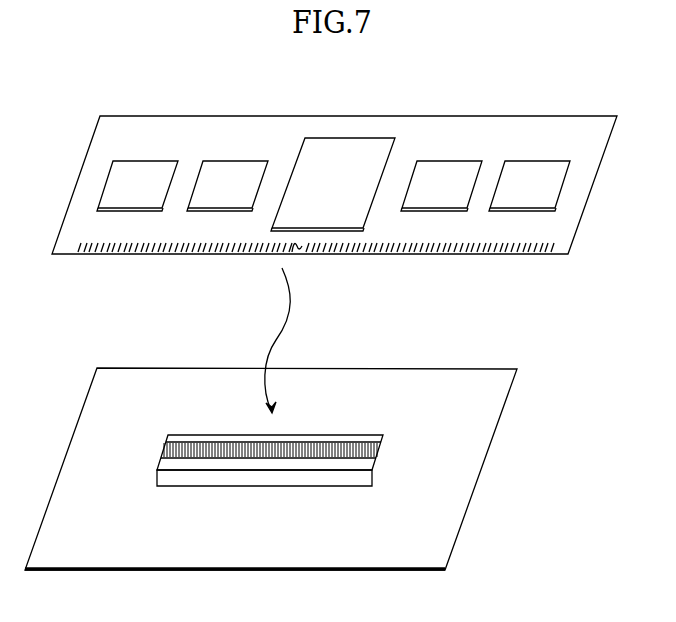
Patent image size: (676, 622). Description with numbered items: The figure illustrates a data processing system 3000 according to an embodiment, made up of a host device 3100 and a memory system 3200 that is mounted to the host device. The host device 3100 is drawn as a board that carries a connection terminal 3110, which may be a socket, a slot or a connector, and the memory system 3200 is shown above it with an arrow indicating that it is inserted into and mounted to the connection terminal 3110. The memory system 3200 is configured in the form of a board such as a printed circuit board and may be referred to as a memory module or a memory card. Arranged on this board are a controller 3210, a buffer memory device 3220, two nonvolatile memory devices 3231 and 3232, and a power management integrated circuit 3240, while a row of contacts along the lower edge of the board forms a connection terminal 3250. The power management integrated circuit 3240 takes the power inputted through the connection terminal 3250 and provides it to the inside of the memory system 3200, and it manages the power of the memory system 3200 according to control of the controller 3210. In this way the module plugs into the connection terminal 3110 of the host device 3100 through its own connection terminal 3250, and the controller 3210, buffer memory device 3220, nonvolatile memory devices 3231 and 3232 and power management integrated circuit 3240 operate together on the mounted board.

The data processing system 3000 is at (193, 85).
The memory system 3200 is at (334, 206).
The controller 3210 is at (333, 184).
The buffer memory device 3220 is at (227, 186).
The nonvolatile memory device 3231 is at (441, 186).
The nonvolatile memory device 3232 is at (529, 186).
The power management integrated circuit 3240 is at (137, 186).
The connection terminal 3250 is at (84, 253).
The host device 3100 is at (271, 469).
The connection terminal 3110 is at (400, 430).